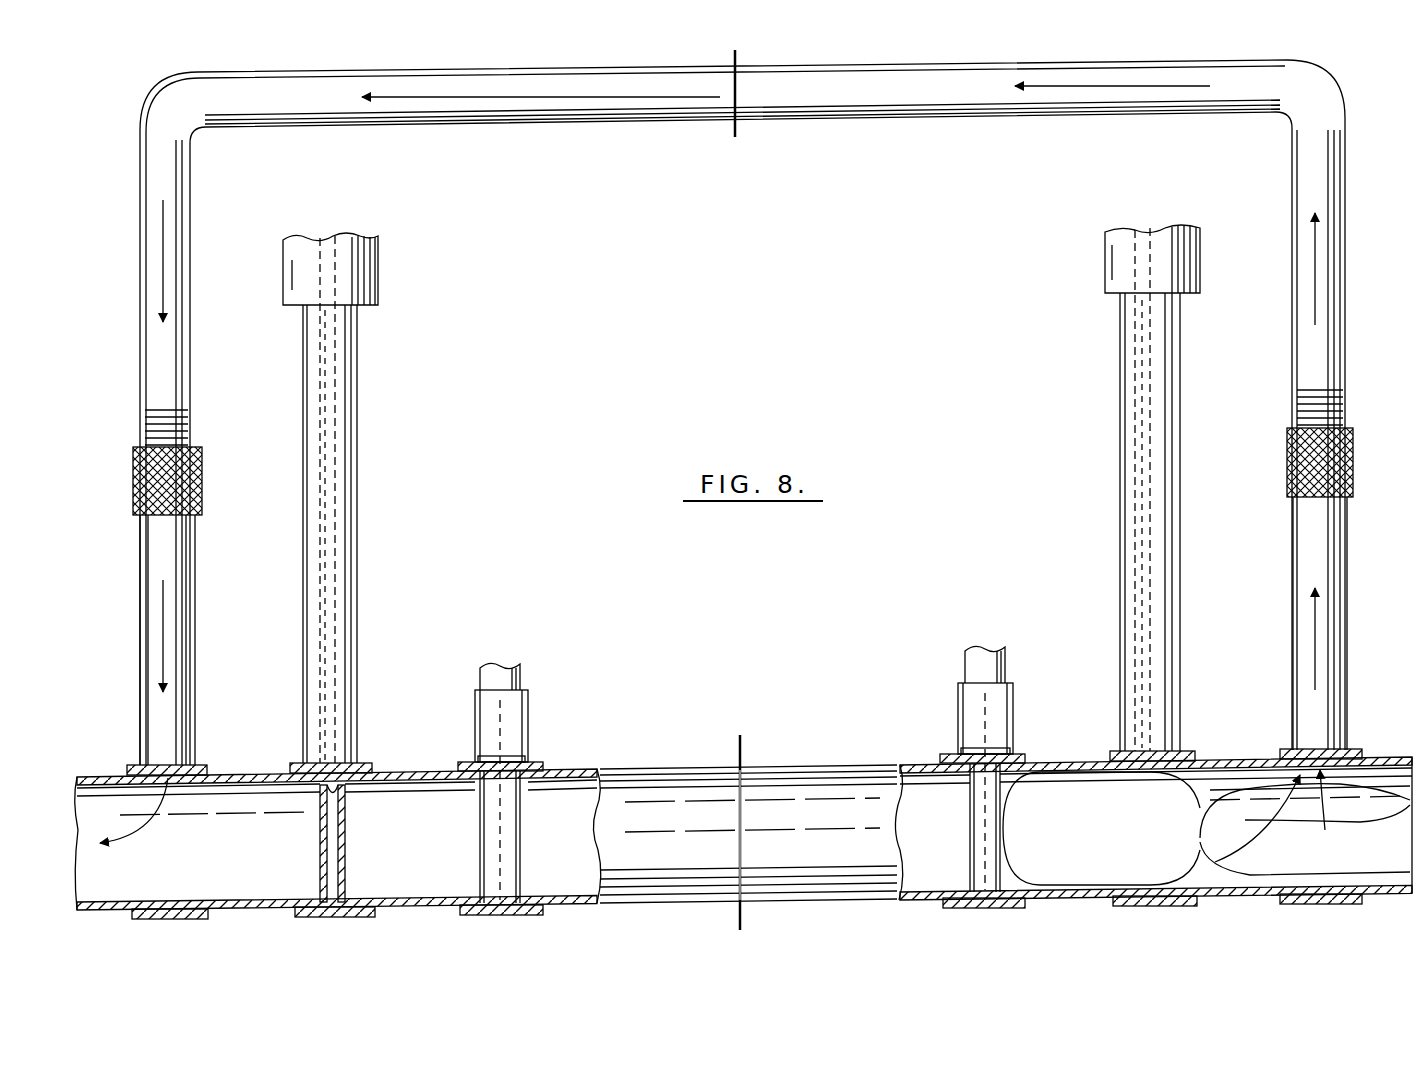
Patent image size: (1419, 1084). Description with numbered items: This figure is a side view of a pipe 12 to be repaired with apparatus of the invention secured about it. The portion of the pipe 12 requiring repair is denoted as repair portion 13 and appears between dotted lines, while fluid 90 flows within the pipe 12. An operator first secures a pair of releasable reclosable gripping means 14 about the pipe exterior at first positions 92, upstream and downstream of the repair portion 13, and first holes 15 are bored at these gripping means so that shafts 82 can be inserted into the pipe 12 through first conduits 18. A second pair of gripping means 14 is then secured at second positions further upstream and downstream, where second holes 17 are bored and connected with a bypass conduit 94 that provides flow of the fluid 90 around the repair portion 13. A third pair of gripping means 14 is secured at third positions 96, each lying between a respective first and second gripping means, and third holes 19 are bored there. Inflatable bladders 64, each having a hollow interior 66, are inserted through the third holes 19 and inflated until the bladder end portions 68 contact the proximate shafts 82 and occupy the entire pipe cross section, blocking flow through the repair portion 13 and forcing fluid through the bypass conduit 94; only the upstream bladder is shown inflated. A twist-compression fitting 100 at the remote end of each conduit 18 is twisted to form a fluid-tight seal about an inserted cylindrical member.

The pipe 12 is at (905, 758).
The repair portion 13 is at (790, 780).
The releasable reclosable gripping means 14 is at (545, 752).
The first holes 15 is at (478, 758).
The second holes 17 is at (195, 766).
The first conduit 18 is at (182, 672).
The third holes 19 is at (357, 764).
The inflatable bladder 64 is at (345, 388).
The hollow interior of bladder 66 is at (338, 475).
The bladder end portion 68 is at (347, 840).
The shaft 82 is at (515, 676).
The fluid 90 is at (1310, 804).
The first positions 92 is at (475, 917).
The bypass conduit 94 is at (1328, 172).
The third positions 96 is at (305, 920).
The twist-compression fitting 100 is at (202, 495).